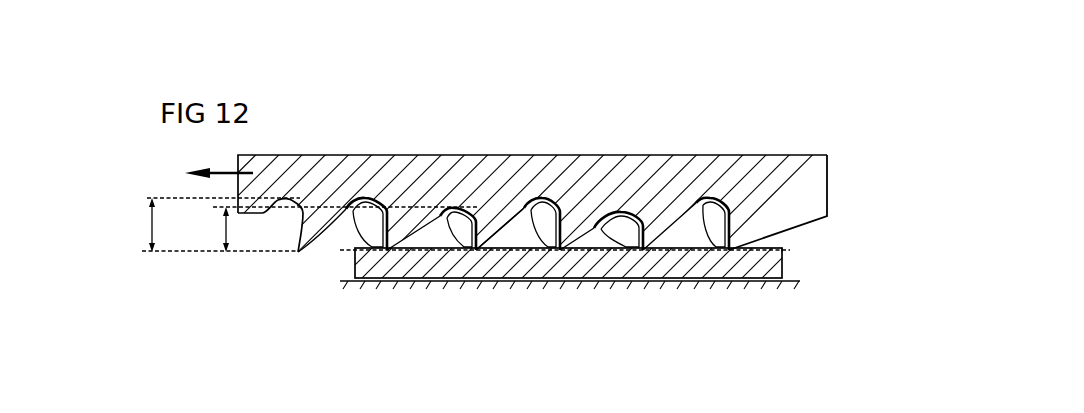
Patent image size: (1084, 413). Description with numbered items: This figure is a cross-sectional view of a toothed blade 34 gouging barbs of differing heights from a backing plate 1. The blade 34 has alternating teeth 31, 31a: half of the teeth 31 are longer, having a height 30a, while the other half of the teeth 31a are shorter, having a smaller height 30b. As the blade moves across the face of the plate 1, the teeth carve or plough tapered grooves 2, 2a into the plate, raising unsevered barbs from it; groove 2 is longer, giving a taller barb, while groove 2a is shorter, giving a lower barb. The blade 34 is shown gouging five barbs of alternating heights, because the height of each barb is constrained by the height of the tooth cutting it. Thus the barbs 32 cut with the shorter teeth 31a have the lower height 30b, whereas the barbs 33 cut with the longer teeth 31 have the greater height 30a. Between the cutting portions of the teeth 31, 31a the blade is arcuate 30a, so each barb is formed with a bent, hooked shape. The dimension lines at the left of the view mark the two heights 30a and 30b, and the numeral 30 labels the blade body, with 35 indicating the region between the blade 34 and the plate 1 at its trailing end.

The backing plate 1 is at (776, 263).
The tapered groove 2 is at (412, 205).
The tapered groove 2a is at (492, 238).
The moving block 30 is at (283, 198).
The height 30a is at (643, 69).
The height 30b is at (327, 229).
The tooth 31 is at (357, 192).
The tooth 31a is at (473, 245).
The barb 32 is at (453, 207).
The barb 33 is at (527, 207).
The toothed blade 34 is at (797, 168).
The gap 35 is at (787, 250).